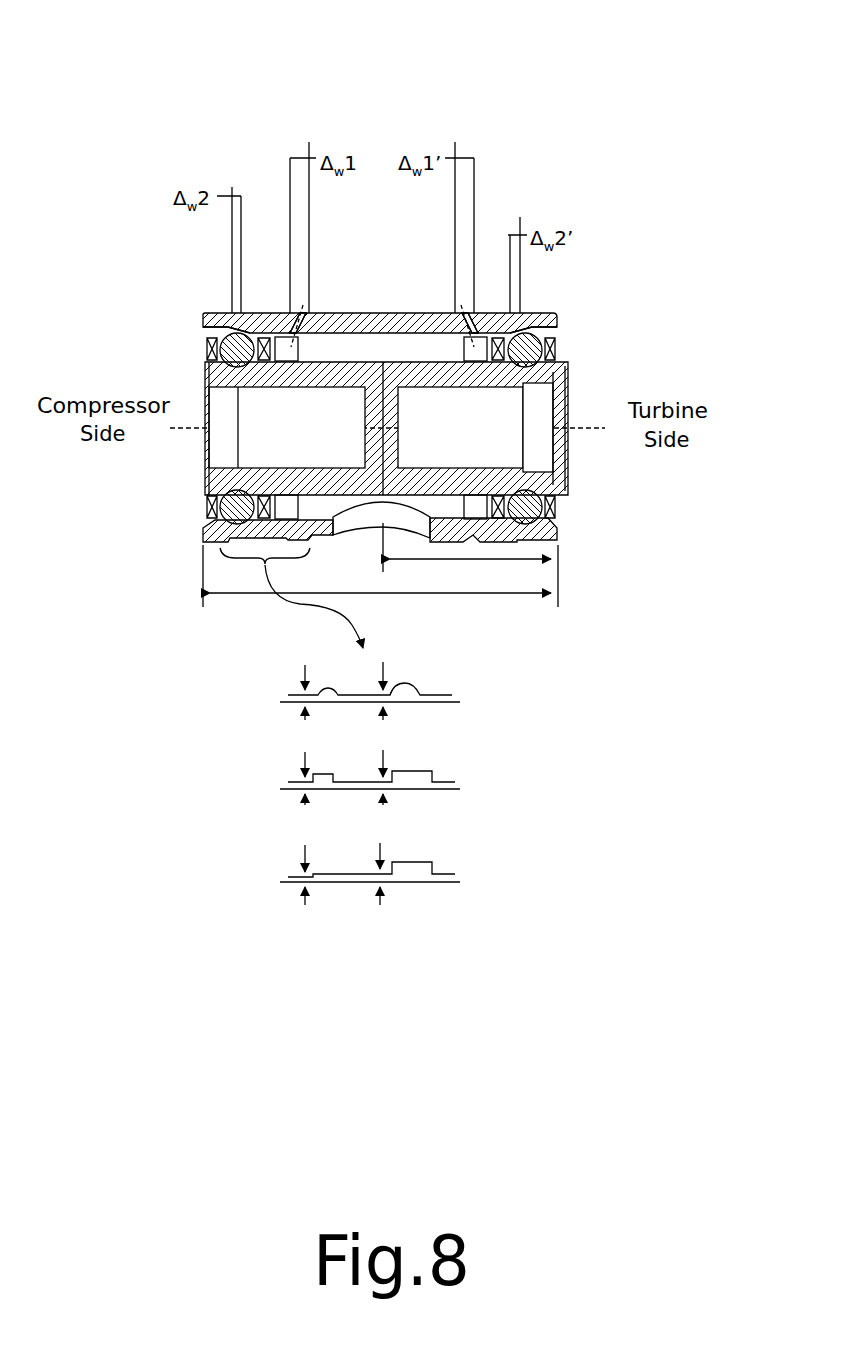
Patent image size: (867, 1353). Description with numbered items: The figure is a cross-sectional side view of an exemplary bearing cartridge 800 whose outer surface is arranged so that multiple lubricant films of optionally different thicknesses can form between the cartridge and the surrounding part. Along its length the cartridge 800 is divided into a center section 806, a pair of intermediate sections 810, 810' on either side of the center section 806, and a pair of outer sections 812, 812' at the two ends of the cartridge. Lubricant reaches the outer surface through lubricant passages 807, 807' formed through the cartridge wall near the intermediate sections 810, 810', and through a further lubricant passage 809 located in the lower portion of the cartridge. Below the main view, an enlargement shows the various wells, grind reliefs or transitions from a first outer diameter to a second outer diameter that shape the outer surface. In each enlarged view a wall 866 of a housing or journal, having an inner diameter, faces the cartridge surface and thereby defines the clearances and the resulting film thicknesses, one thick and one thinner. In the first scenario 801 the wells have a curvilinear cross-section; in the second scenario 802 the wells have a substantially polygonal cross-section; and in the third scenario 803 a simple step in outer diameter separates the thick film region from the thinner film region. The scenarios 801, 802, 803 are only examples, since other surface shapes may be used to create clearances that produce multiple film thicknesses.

The bearing cartridge 800 is at (197, 53).
The first scenario 801 is at (240, 676).
The second scenario 802 is at (240, 766).
The third scenario 803 is at (240, 854).
The center section 806 is at (402, 312).
The lubricant passage 807 is at (329, 334).
The lubricant passage 807' is at (435, 334).
The lubricant passage 809 is at (375, 527).
The intermediate section 810 is at (256, 218).
The intermediate section 810' is at (507, 217).
The outer section 812 is at (187, 302).
The outer section 812' is at (572, 302).
The wall 866 is at (442, 703).